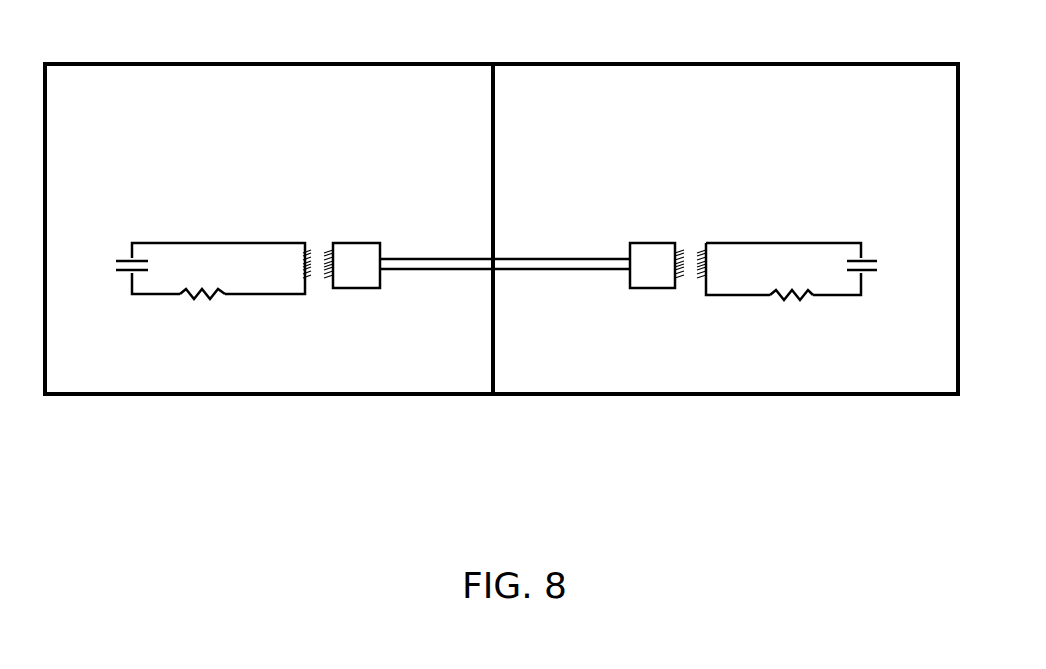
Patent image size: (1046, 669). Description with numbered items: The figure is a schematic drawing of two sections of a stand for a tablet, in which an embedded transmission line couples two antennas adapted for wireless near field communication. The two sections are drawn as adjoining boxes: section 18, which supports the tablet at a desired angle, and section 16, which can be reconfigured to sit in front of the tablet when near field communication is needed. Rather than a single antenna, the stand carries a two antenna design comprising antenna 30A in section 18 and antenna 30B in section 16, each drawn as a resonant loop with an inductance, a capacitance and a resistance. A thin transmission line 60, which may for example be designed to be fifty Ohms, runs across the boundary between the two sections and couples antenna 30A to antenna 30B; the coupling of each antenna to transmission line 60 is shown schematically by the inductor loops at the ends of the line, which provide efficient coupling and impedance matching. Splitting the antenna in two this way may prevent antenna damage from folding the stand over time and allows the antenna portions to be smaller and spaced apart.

The section 18 is at (192, 395).
The section 16 is at (697, 395).
The antenna 30A is at (183, 229).
The antenna 30B is at (753, 229).
The transmission line 60 is at (413, 259).